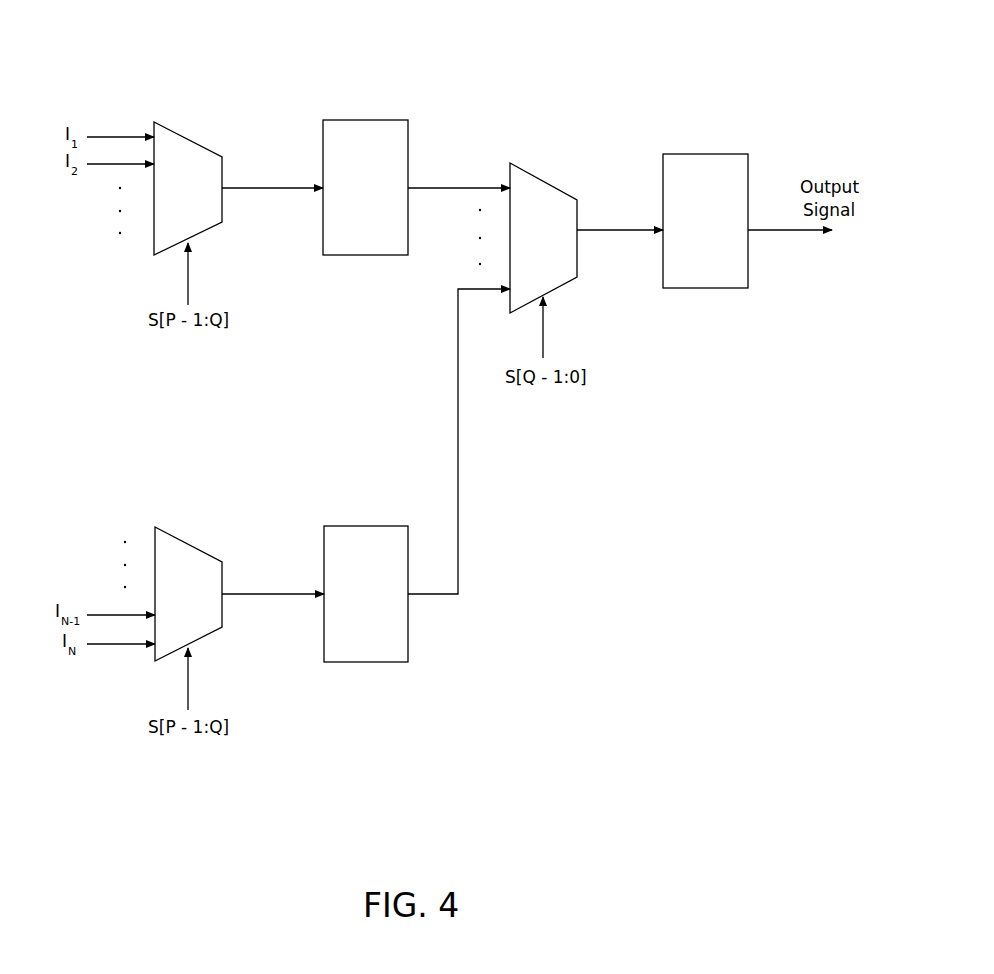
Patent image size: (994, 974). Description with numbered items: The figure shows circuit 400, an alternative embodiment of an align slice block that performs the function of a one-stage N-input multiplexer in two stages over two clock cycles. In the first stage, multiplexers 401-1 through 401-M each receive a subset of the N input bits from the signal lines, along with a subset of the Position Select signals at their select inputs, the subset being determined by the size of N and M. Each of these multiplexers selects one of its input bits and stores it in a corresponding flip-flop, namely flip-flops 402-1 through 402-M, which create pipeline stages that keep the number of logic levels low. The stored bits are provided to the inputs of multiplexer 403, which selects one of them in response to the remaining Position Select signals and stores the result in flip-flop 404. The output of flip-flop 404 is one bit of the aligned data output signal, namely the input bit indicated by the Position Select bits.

The circuit 400 is at (607, 42).
The multiplexer 401-1 is at (178, 131).
The multiplexer 401-M is at (183, 540).
The flip-flop 402-1 is at (360, 119).
The flip-flop 402-M is at (393, 662).
The multiplexer 403 is at (538, 176).
The flip-flop 404 is at (686, 153).